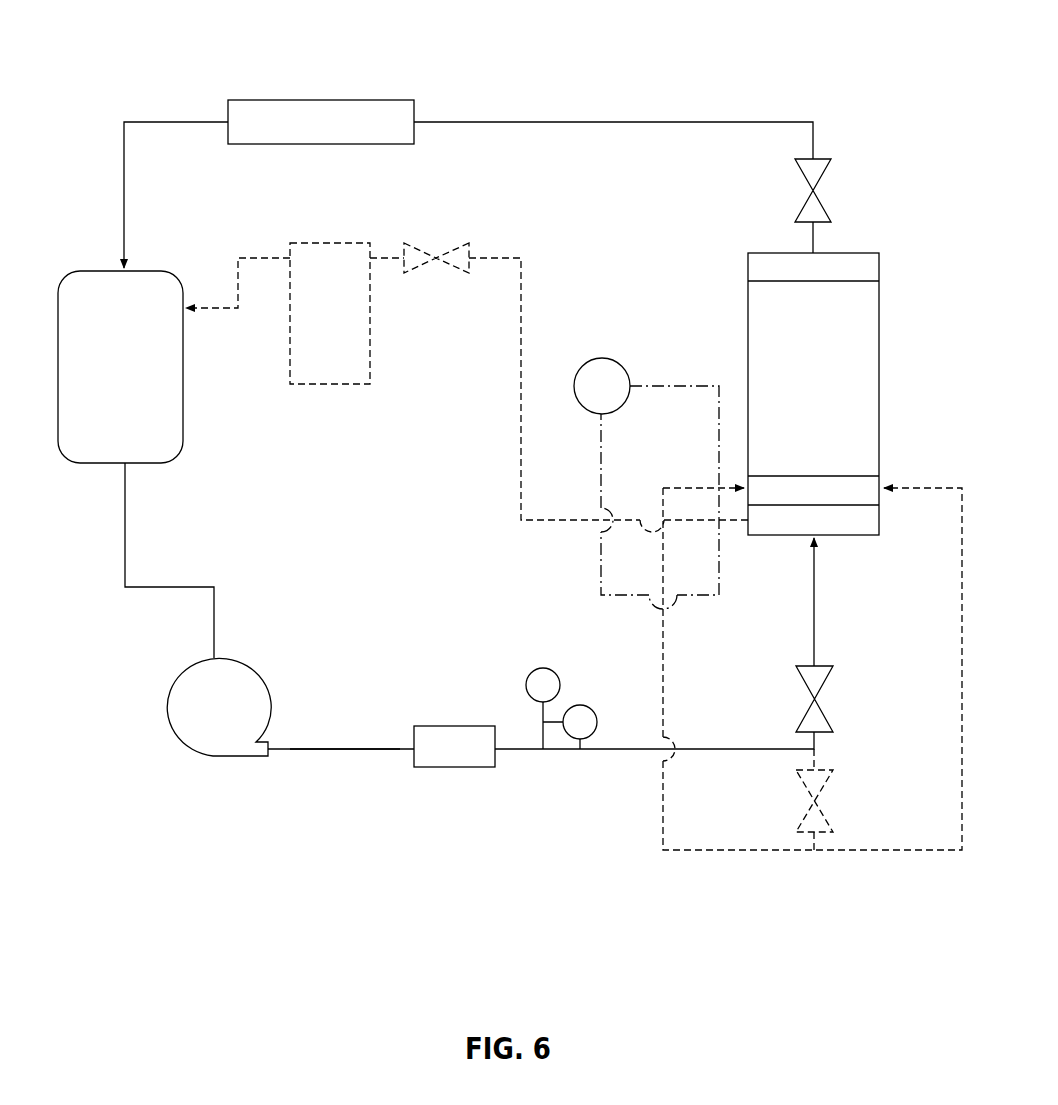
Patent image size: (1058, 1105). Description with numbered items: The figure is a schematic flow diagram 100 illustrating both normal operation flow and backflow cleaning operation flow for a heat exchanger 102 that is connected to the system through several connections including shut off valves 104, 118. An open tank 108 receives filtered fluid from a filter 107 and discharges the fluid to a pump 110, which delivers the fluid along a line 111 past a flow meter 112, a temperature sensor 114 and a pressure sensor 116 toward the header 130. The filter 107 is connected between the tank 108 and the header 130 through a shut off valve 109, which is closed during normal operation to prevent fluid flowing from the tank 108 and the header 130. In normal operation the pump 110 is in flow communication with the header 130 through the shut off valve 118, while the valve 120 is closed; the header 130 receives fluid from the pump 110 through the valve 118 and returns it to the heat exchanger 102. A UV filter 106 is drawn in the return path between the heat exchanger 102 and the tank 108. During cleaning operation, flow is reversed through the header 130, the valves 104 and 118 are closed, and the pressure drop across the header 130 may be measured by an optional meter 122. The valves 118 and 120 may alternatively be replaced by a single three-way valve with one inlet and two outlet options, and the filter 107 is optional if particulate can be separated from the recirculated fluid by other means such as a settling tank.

The schematic flow diagram 100 is at (652, 68).
The heat exchanger 102 is at (866, 364).
The shut off valve 104 is at (822, 203).
The UV filter 106 is at (300, 100).
The filter 107 is at (332, 243).
The open tank 108 is at (85, 268).
The shut off valve 109 is at (438, 250).
The pump 110 is at (215, 760).
The conduit 111 is at (313, 746).
The mass flow meter 112 is at (432, 770).
The temperature sensor 114 is at (536, 664).
The pressure sensor 116 is at (581, 752).
The shut off valve 118 is at (822, 668).
The valve 120 is at (820, 812).
The meter 122 is at (600, 357).
The header 130 is at (848, 490).